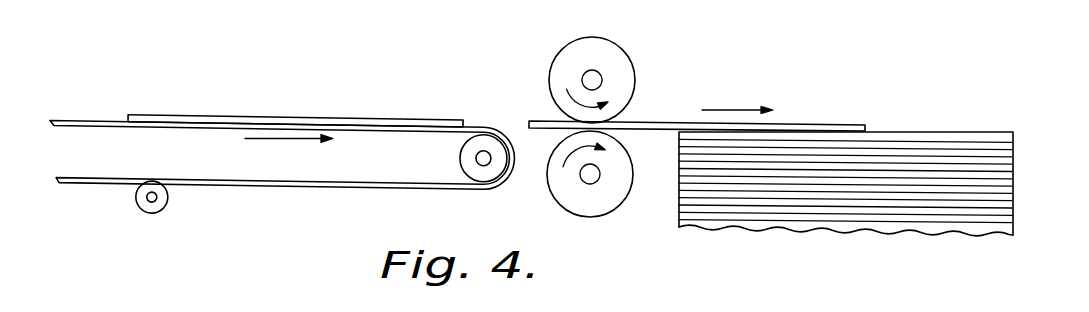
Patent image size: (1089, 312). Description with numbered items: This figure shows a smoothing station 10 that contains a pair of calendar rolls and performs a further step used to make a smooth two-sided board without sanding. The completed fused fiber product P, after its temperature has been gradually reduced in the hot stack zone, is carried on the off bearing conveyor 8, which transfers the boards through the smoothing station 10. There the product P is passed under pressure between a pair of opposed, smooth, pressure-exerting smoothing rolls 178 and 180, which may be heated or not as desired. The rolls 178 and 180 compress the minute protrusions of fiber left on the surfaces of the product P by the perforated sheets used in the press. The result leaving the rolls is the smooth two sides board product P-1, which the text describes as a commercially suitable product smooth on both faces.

The off bearing conveyor 8 is at (80, 120).
The product P is at (298, 112).
The smoothing station 10 is at (666, 58).
The smoothing roll 178 is at (563, 57).
The smoothing roll 180 is at (607, 206).
The smooth two sides board product P-1 is at (828, 125).